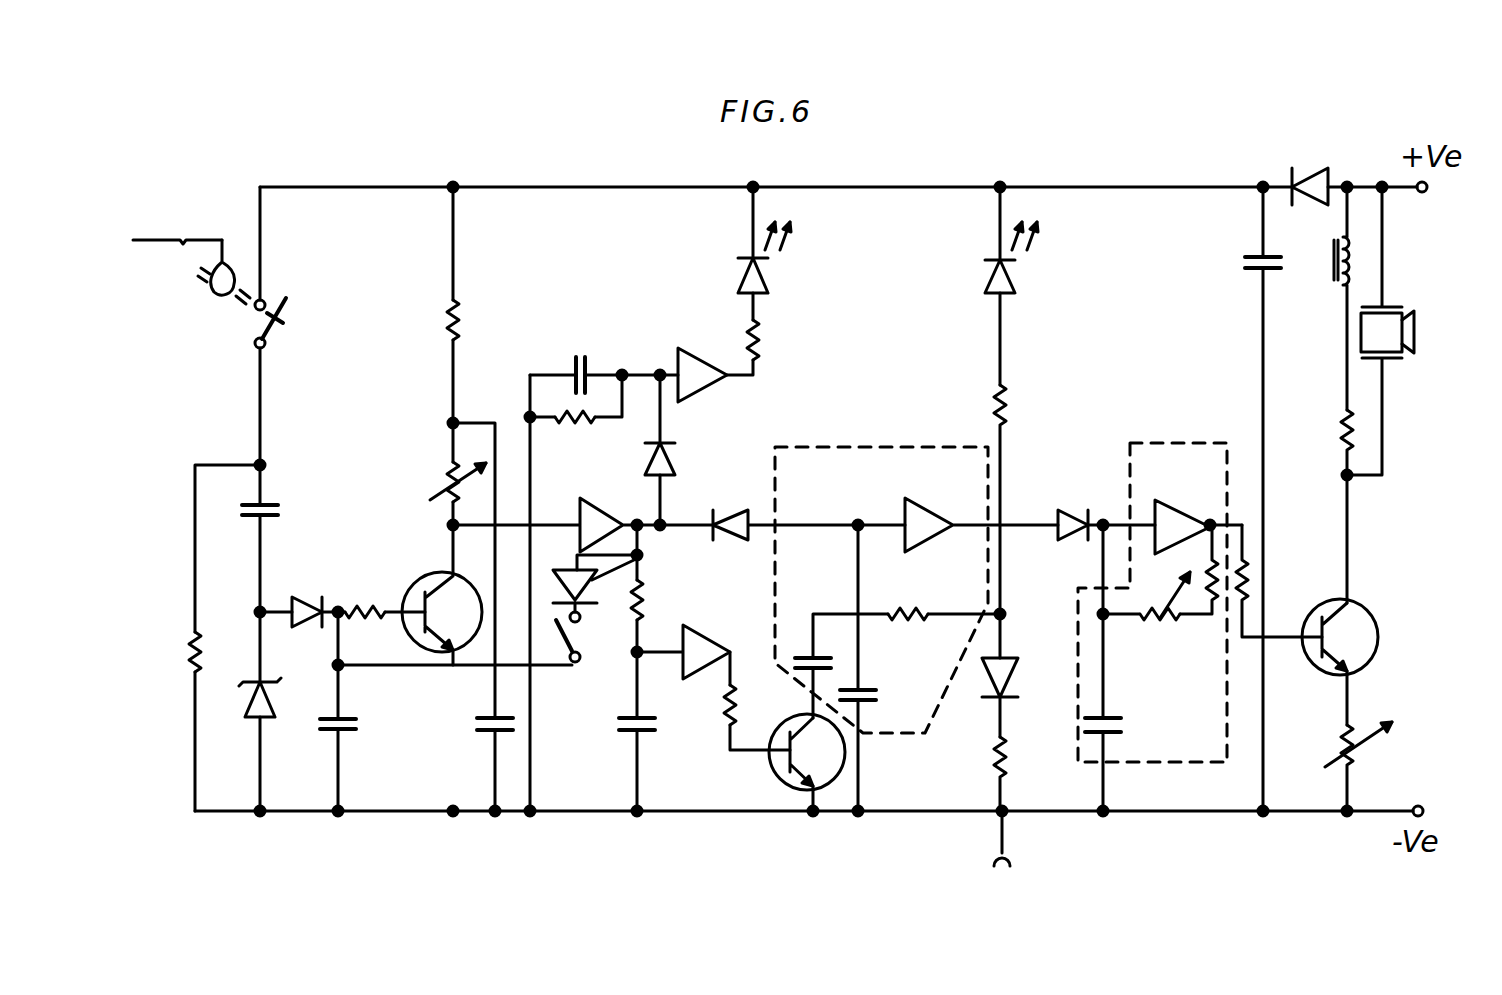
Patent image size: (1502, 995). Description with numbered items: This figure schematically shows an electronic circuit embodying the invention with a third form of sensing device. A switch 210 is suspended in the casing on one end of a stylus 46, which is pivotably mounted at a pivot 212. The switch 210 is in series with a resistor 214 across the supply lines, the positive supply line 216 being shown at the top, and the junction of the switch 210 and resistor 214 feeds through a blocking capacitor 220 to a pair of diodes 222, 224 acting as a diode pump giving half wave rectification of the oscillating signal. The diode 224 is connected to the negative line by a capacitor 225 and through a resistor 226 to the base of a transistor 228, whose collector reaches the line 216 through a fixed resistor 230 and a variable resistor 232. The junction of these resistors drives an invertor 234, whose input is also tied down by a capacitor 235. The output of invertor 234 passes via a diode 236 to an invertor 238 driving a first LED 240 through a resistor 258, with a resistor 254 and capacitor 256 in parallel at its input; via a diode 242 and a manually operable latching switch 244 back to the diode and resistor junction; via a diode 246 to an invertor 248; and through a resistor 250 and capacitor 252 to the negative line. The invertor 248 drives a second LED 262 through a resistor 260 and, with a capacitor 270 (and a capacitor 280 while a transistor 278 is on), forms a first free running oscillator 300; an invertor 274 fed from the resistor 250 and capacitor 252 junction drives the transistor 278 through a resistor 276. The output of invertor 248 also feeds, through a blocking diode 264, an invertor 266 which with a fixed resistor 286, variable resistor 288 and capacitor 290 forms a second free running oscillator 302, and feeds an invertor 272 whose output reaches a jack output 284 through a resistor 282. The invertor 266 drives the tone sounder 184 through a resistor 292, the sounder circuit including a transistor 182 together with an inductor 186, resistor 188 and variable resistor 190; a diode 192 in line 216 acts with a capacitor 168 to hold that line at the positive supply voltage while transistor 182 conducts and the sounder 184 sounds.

The stylus 46 is at (152, 238).
The pivot mounting 212 is at (223, 240).
The switch 210 is at (235, 358).
The positive supply line 216 is at (583, 187).
The fixed resistor 230 is at (458, 318).
The capacitor 256 is at (580, 355).
The invertor 238 is at (688, 348).
The first LED 240 is at (772, 293).
The resistor 258 is at (762, 352).
The second LED 262 is at (987, 285).
The resistor 260 is at (1013, 408).
The diode 192 is at (1325, 170).
The capacitor 168 is at (1246, 266).
The tone sounder circuit inductor 186 is at (1334, 265).
The tone sounder 184 is at (1420, 330).
The tone sounder circuit resistor 188 is at (1342, 435).
The second free running oscillator 302 is at (1198, 443).
The first free running oscillator 300 is at (950, 447).
The blocking capacitor 220 is at (268, 505).
The variable resistor 232 is at (442, 498).
The resistor 254 is at (576, 593).
The diode 236 is at (676, 452).
The invertor 234 is at (610, 523).
The diode 246 is at (745, 518).
The invertor 248 is at (938, 494).
The blocking diode 264 is at (1078, 513).
The invertor 266 is at (1195, 493).
The resistor 292 is at (1256, 576).
The diode 224 is at (300, 598).
The resistor 226 is at (372, 605).
The transistor 228 is at (437, 655).
The diode 242 is at (640, 565).
The resistor 250 is at (650, 600).
The manually operable latching switch 244 is at (600, 637).
The invertor 274 is at (738, 648).
The capacitor 280 is at (825, 653).
The invertor 272 is at (1015, 662).
The transistor 182 is at (1365, 613).
The resistor 214 is at (186, 650).
The diode 222 is at (244, 715).
The capacitor 225 is at (350, 728).
The capacitor 235 is at (513, 727).
The capacitor 252 is at (660, 727).
The capacitor 270 is at (874, 701).
The fixed resistor 286 is at (1208, 614).
The variable resistor 288 is at (1137, 625).
The capacitor 290 is at (1128, 723).
The resistor 276 is at (750, 742).
The transistor 278 is at (833, 790).
The resistor 282 is at (992, 742).
The jack output 284 is at (990, 866).
The tone sounder circuit variable resistor 190 is at (1370, 765).